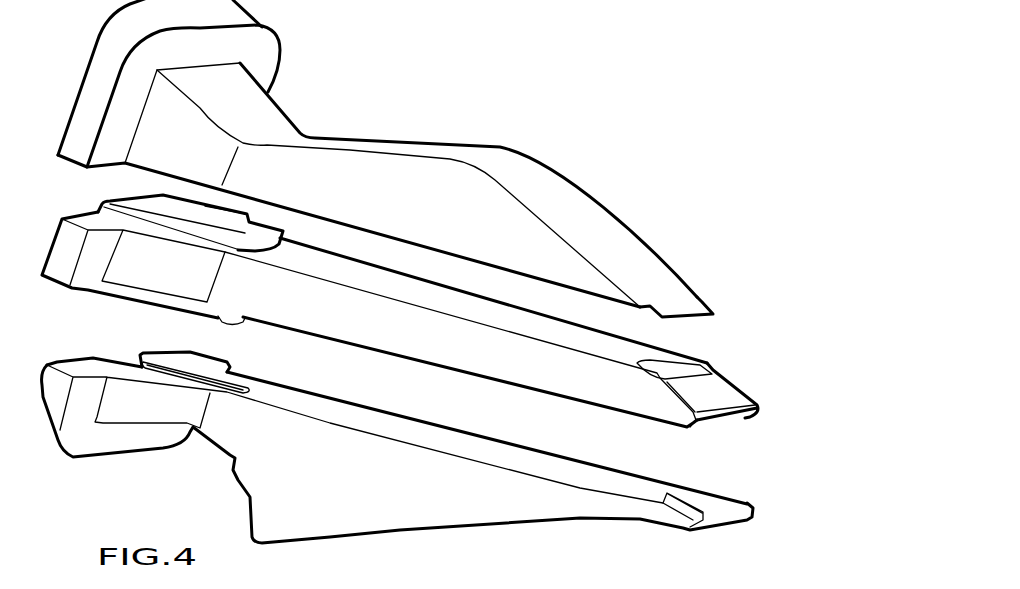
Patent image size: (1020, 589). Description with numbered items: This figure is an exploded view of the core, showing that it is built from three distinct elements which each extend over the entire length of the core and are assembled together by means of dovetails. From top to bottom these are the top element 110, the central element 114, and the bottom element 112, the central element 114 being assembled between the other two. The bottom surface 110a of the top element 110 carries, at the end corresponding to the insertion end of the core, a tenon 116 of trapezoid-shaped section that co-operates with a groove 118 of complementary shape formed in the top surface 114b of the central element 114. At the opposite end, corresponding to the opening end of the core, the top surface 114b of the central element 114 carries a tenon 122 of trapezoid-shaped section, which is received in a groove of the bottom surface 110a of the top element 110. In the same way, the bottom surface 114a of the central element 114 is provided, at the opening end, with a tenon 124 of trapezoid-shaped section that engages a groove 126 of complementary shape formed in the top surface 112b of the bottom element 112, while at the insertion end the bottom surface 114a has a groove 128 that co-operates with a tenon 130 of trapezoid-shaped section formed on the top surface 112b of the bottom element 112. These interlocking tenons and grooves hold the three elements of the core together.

The top element 110 is at (407, 158).
The bottom surface of the top element 110a is at (517, 283).
The bottom element 112 is at (444, 434).
The top surface of the bottom element 112b is at (563, 470).
The central element 114 is at (426, 327).
The bottom surface of the central element 114a is at (445, 370).
The top surface of the central element 114b is at (453, 307).
The tenon 116 is at (707, 308).
The groove 118 is at (743, 377).
The tenon 122 is at (262, 236).
The tenon 124 is at (222, 318).
The groove 126 is at (157, 358).
The groove 128 is at (717, 427).
The tenon 130 is at (697, 494).